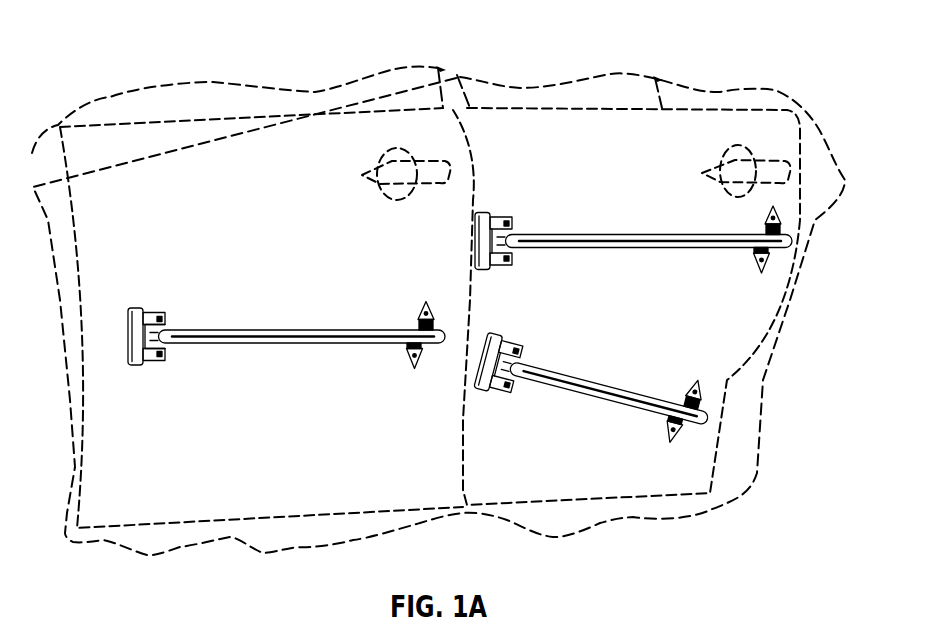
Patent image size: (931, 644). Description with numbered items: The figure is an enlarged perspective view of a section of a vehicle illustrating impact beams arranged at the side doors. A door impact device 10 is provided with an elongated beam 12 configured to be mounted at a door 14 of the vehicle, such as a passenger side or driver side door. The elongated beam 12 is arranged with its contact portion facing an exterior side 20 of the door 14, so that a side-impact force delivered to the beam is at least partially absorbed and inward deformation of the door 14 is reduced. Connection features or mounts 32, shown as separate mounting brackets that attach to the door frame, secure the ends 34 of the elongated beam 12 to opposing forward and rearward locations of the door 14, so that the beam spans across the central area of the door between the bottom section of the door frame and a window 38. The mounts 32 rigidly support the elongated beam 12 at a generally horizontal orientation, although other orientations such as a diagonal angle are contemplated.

The door impact device 10 is at (275, 397).
The elongated beam 12 is at (208, 330).
The door 14 is at (263, 200).
The exterior side 20 is at (208, 183).
The mounts 32 is at (143, 313).
The ends 34 is at (170, 347).
The window 38 is at (135, 112).